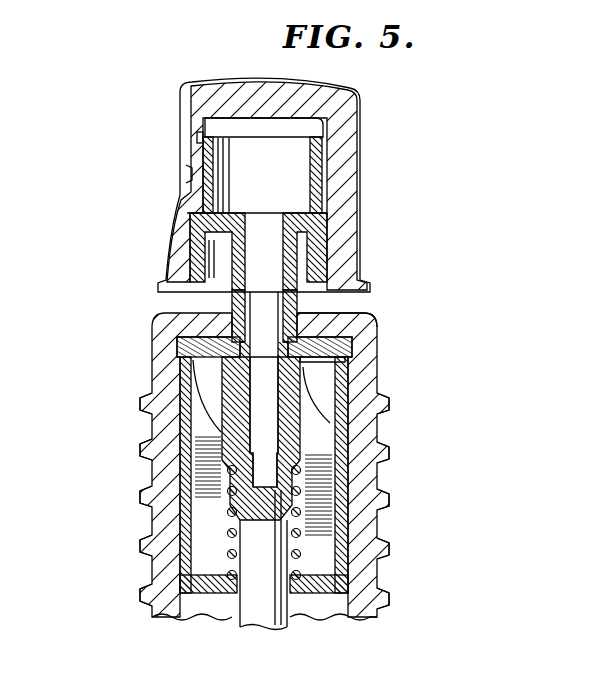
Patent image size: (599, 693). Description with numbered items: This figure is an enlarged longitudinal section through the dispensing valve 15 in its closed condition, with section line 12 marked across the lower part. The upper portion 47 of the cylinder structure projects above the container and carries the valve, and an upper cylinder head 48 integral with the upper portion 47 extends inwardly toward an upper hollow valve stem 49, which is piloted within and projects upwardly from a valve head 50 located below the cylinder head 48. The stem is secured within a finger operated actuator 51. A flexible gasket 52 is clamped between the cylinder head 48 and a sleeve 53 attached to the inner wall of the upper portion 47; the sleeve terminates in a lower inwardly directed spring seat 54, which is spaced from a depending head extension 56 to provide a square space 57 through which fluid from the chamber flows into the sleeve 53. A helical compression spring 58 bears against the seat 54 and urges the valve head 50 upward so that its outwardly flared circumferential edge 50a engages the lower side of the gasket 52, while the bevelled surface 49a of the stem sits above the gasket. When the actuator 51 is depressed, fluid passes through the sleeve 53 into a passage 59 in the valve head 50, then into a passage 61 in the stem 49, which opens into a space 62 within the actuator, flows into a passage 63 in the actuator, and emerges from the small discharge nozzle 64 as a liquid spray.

The section line 12- 12 is at (120, 577).
The dispensing valve 15 is at (132, 213).
The upper portion 47 is at (362, 567).
The upper cylinder head 48 is at (183, 327).
The upper hollow valve stem 49 is at (290, 305).
The bevelled surface 49a is at (335, 318).
The valve head 50 is at (297, 432).
The circumferential edge 50a is at (335, 352).
The finger operated actuator 51 is at (343, 148).
The gasket 52 is at (177, 350).
The sleeve 53 is at (182, 424).
The spring seat 54 is at (223, 578).
The head extension 56 is at (268, 600).
The square space 57 is at (237, 580).
The helical compression spring 58 is at (230, 520).
The passage 59 is at (255, 398).
The passage 61 is at (262, 392).
The space 62 is at (238, 126).
The passage 63 is at (197, 137).
The discharge nozzle 64 is at (193, 177).